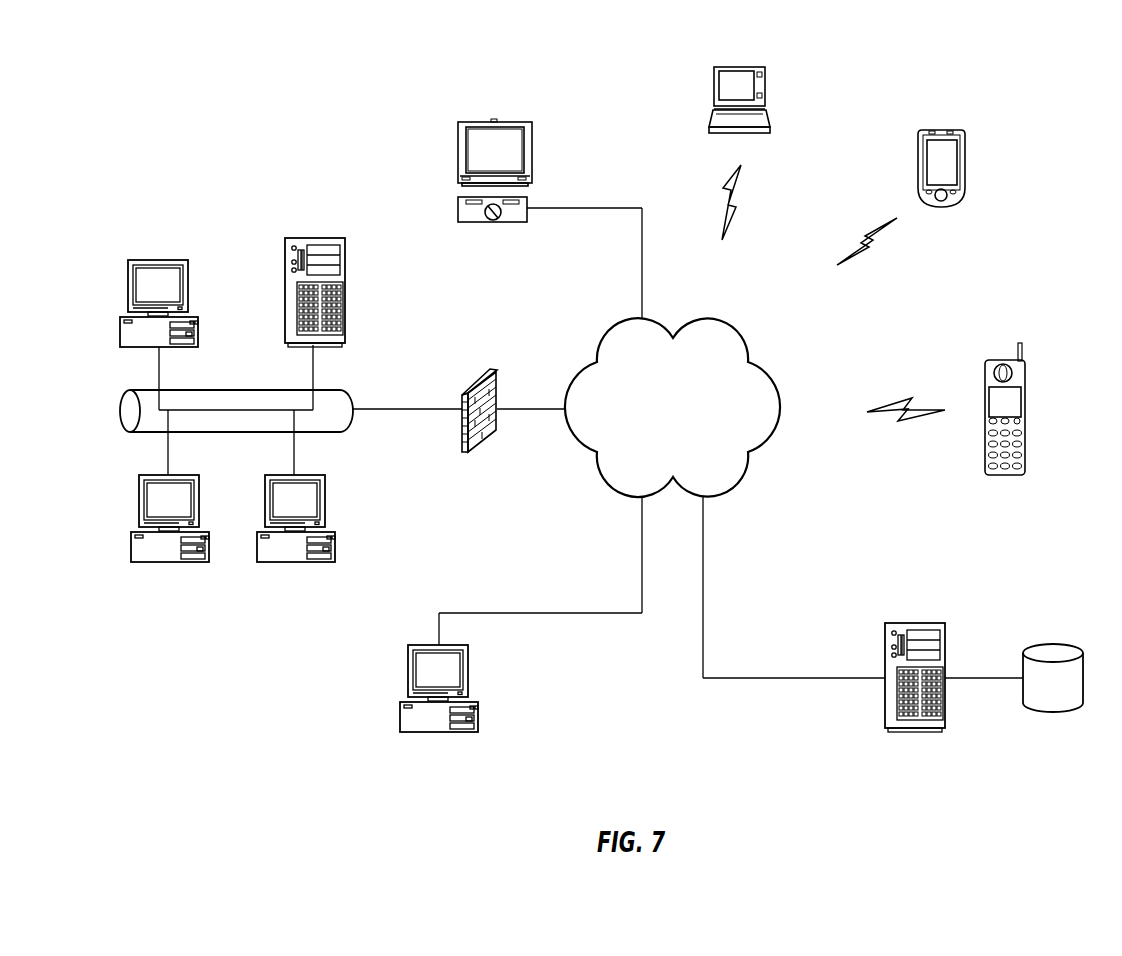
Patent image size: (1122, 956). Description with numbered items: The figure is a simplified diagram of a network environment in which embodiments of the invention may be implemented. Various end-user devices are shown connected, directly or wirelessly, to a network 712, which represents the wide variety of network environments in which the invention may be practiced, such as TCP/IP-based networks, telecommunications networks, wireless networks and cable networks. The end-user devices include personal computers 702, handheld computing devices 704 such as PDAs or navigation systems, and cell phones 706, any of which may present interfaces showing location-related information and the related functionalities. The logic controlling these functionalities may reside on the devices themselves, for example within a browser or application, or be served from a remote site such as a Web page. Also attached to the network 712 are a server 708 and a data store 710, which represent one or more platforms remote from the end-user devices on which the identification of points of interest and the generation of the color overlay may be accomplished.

The personal computers 702 is at (407, 377).
The handheld computing devices 704 is at (668, 155).
The cell phones 706 is at (963, 399).
The server 708 is at (877, 656).
The data store 710 is at (1024, 657).
The network 712 is at (652, 394).